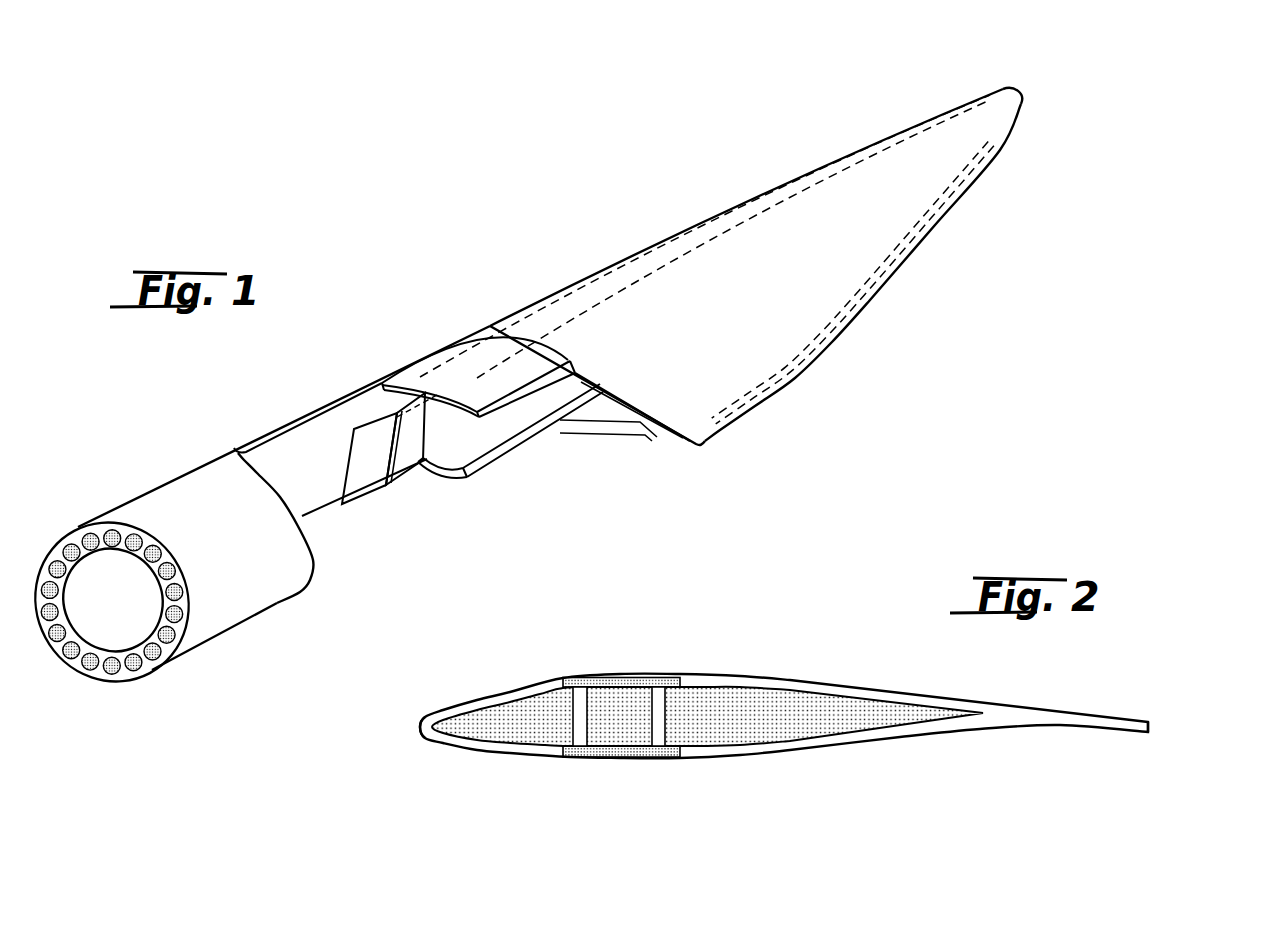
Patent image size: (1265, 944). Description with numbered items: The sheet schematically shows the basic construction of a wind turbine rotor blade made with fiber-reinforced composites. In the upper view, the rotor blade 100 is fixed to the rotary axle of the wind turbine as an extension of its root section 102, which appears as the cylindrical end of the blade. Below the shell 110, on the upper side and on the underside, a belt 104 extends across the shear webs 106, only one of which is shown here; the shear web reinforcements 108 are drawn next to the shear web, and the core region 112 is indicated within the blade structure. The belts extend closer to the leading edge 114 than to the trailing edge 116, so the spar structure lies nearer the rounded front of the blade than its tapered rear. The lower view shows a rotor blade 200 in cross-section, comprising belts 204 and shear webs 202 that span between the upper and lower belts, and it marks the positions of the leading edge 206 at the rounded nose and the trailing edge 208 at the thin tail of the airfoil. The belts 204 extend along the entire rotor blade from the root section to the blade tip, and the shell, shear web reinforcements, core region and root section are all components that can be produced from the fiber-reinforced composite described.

In FIG. 1, the rotor blade 100 is at (982, 233).
In FIG. 1, the root section 102 is at (250, 568).
In FIG. 1, the belt 104 is at (478, 366).
In FIG. 1, the shear web 106 is at (403, 462).
In FIG. 1, the shear web reinforcement 108 is at (360, 475).
In FIG. 1, the shell 110 is at (742, 240).
In FIG. 1, the core region 112 is at (629, 399).
In FIG. 1, the leading edge 114 is at (640, 240).
In FIG. 1, the trailing edge 116 is at (888, 291).
In FIG. 2, the rotor blade 200 is at (930, 759).
In FIG. 2, the shear web 202 is at (663, 713).
In FIG. 2, the belt 204 is at (617, 677).
In FIG. 2, the leading edge 206 is at (408, 736).
In FIG. 2, the trailing edge 208 is at (1158, 750).